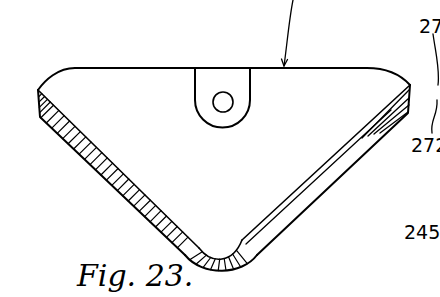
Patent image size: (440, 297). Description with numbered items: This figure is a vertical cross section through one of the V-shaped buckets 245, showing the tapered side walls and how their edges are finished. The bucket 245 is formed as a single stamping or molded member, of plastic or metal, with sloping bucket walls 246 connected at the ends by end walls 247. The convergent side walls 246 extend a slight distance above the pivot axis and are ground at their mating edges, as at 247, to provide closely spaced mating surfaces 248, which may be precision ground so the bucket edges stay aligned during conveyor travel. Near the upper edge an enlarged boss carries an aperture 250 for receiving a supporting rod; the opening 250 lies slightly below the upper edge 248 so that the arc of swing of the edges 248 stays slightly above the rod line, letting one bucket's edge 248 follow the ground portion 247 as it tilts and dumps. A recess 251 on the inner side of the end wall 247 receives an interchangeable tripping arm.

The V-shaped bucket 245 is at (272, 248).
The sloping bucket wall 246 is at (120, 195).
The end wall 247 is at (315, 105).
The mating surface 248 is at (38, 88).
The aperture 250 is at (212, 91).
The recess 251 is at (248, 88).